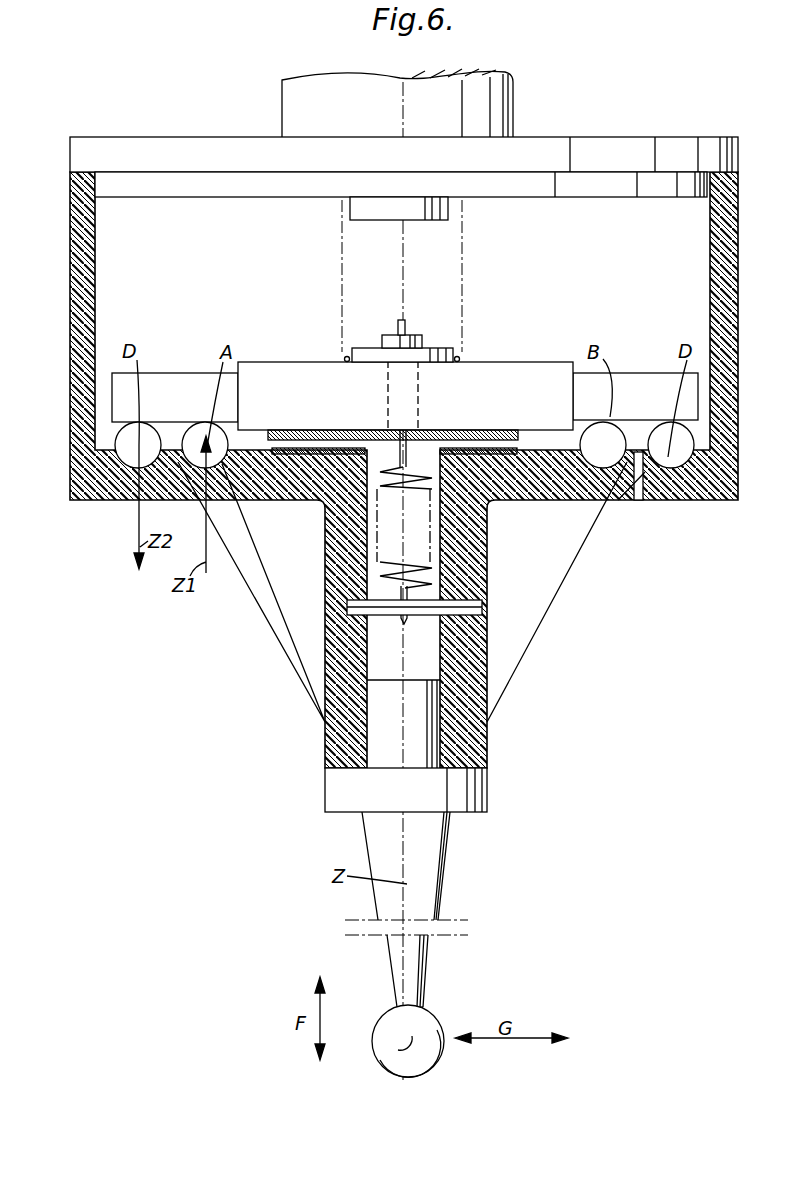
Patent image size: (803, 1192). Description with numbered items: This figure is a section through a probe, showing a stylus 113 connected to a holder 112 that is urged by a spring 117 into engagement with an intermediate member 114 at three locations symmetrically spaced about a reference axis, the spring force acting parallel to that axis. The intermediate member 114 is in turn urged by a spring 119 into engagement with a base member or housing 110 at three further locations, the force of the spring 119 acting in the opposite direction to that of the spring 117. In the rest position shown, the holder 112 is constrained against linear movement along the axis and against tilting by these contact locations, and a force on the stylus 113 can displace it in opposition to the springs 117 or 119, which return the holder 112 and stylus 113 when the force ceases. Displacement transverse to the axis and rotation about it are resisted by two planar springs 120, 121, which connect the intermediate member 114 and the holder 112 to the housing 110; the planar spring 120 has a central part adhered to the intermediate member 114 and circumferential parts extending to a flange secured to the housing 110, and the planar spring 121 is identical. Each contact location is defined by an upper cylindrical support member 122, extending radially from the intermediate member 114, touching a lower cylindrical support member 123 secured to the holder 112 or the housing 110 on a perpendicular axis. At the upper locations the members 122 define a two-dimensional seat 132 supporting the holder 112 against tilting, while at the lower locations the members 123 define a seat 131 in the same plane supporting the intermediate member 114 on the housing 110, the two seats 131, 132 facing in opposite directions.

The base member or housing 110 is at (620, 149).
The holder 112 is at (487, 645).
The stylus 113 is at (440, 882).
The intermediate member 114 is at (502, 375).
The spring 117 is at (380, 575).
The spring 119 is at (342, 330).
The planar spring 120 is at (287, 425).
The planar spring 121 is at (307, 450).
The upper cylindrical support member 122 is at (167, 388).
The lower cylindrical support member 123 is at (132, 453).
The seat 131 is at (667, 453).
The seat 132 is at (623, 411).